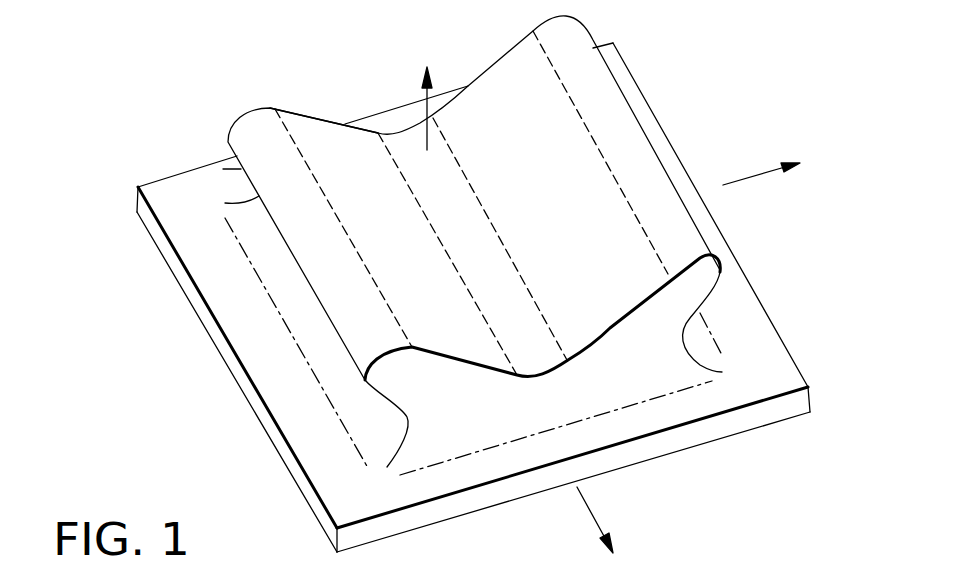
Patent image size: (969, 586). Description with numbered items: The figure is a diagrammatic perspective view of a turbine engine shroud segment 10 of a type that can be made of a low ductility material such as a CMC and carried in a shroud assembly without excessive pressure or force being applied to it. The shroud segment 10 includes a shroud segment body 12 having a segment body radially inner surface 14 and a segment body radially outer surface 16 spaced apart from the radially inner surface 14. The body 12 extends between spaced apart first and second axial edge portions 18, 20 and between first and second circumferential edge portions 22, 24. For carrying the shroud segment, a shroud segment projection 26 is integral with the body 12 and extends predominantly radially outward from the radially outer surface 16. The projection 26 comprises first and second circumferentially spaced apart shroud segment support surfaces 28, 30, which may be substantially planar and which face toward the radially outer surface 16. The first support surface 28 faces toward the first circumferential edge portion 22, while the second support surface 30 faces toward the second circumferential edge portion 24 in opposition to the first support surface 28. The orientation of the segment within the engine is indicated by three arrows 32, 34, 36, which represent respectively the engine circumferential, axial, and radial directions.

The shroud segment 10 is at (213, 64).
The shroud segment body 12 is at (740, 443).
The segment body radially inner surface 14 is at (403, 533).
The segment body radially outer surface 16 is at (394, 118).
The first axial edge portion 18 is at (152, 178).
The second axial edge portion 20 is at (497, 493).
The first circumferential edge portion 22 is at (227, 349).
The second circumferential edge portion 24 is at (777, 325).
The shroud segment projection 26 is at (530, 213).
The shroud segment first support surface 28 is at (225, 166).
The shroud segment second support surface 30 is at (712, 298).
The arrow representing engine circumferential direction 32 is at (748, 175).
The arrow representing engine axial direction 34 is at (592, 510).
The arrow representing engine radial direction 36 is at (428, 110).